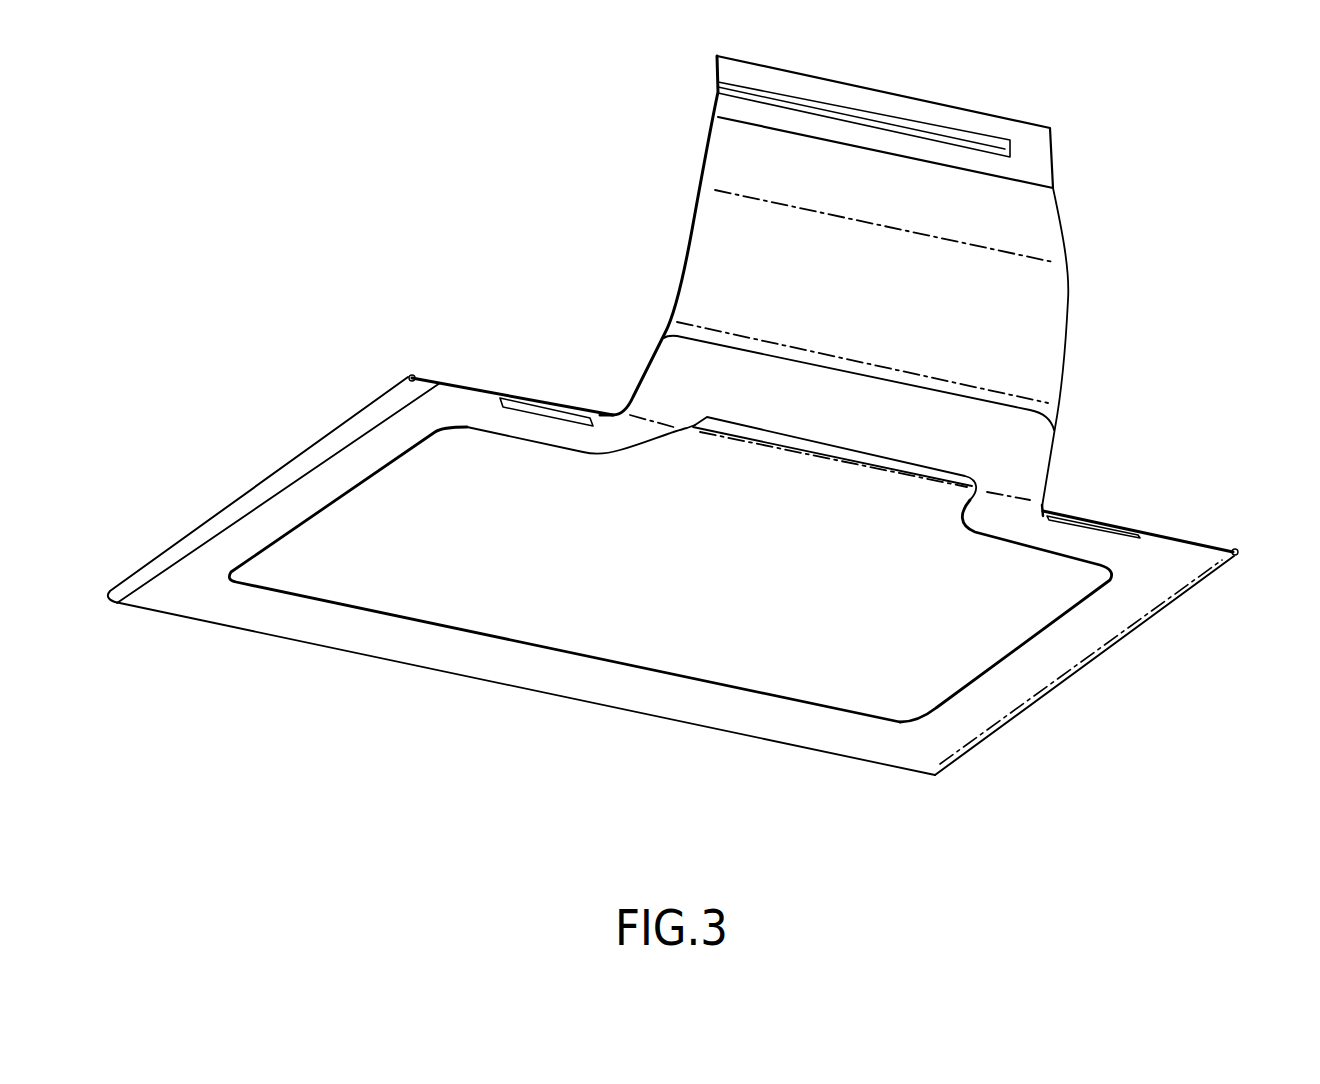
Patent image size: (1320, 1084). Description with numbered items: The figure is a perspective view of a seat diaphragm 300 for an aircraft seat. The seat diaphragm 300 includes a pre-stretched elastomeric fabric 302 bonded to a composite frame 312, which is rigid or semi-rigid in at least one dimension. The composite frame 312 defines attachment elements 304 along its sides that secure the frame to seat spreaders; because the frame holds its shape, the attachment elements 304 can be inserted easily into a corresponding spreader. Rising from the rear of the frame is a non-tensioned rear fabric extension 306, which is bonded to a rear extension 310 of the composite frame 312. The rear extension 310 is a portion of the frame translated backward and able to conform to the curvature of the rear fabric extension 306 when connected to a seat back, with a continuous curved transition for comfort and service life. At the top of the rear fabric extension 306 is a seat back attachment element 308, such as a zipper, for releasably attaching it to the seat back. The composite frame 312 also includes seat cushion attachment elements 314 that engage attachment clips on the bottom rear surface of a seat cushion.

The seat diaphragm 300 is at (256, 160).
The pre-stretched elastomeric fabric 302 is at (352, 597).
The attachment elements 304 is at (270, 478).
The non-tensioned rear fabric extension 306 is at (1058, 340).
The seat back attachment element 308 is at (1043, 142).
The rear extension 310 is at (1042, 448).
The composite frame 312 is at (538, 682).
The seat cushion attachment elements 314 is at (547, 407).